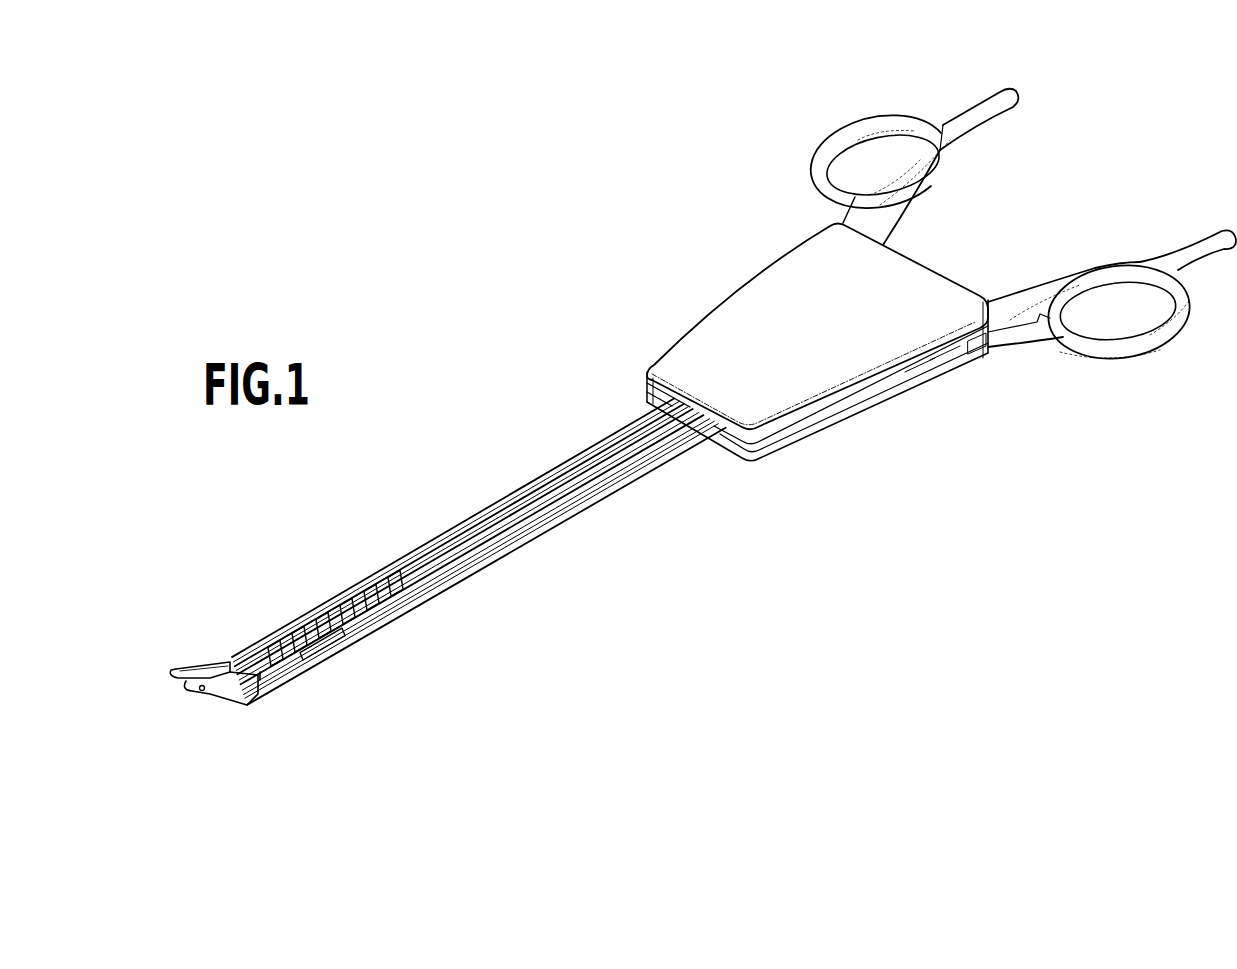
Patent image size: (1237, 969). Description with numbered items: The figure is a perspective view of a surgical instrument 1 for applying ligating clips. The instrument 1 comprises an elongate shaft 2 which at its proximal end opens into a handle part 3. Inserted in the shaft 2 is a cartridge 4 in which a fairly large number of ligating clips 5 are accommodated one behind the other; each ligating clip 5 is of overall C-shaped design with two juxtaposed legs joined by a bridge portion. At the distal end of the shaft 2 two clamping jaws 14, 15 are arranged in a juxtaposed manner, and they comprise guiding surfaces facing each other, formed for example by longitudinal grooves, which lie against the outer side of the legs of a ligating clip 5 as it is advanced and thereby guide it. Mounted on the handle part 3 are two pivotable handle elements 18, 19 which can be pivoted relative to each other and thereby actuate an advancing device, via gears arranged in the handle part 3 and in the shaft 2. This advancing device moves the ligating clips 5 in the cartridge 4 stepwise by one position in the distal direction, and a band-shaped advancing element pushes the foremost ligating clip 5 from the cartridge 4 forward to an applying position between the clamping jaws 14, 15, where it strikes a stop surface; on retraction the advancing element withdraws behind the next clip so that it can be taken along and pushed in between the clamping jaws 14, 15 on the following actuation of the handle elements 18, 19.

The surgical instrument 1 is at (710, 210).
The shaft 2 is at (537, 576).
The handle part 3 is at (806, 379).
The cartridge 4 is at (355, 568).
The ligating clips 5 is at (308, 650).
The clamping jaw 14 is at (180, 667).
The clamping jaw 15 is at (193, 692).
The handle element 18 is at (870, 122).
The handle element 19 is at (1090, 285).